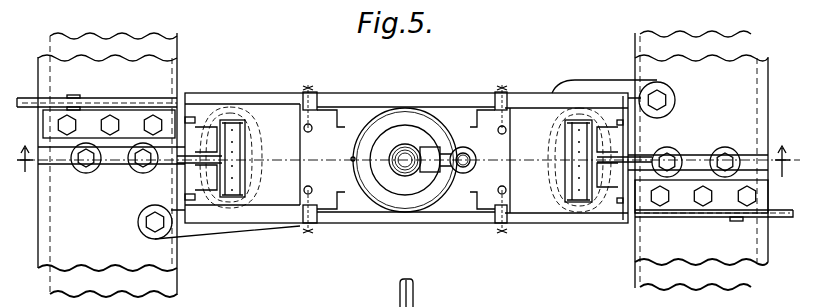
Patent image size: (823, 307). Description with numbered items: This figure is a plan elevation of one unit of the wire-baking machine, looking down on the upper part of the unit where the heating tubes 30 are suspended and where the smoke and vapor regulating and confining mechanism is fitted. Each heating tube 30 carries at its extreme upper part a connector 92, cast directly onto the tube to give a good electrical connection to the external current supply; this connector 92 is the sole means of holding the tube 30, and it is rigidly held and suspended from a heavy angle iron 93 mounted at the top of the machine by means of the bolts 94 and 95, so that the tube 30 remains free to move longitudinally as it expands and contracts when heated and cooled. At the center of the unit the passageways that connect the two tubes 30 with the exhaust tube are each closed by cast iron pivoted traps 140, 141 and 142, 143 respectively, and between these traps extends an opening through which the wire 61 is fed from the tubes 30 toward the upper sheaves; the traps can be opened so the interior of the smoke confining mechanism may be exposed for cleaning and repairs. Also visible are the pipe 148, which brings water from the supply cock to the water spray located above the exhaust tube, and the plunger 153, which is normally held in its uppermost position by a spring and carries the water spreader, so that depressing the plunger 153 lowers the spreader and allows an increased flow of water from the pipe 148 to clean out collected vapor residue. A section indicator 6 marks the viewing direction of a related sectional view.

The section line arrows 6 is at (407, 170).
The heating tube 30 is at (248, 193).
The wire 61 is at (247, 190).
The connector 92 is at (113, 163).
The angle iron 93 is at (163, 283).
The bolt 94 is at (86, 164).
The bolt 95 is at (145, 166).
The pivoted trap 140 is at (524, 122).
The pivoted trap 141 is at (612, 130).
The pivoted trap 142 is at (273, 122).
The pivoted trap 143 is at (196, 142).
The pipe 148 is at (462, 170).
The plunger 153 is at (404, 168).